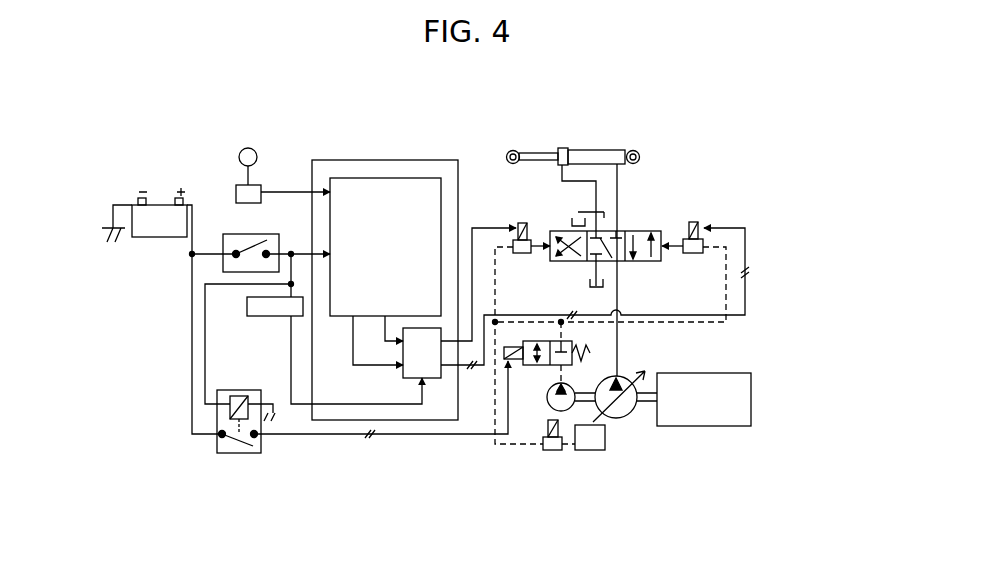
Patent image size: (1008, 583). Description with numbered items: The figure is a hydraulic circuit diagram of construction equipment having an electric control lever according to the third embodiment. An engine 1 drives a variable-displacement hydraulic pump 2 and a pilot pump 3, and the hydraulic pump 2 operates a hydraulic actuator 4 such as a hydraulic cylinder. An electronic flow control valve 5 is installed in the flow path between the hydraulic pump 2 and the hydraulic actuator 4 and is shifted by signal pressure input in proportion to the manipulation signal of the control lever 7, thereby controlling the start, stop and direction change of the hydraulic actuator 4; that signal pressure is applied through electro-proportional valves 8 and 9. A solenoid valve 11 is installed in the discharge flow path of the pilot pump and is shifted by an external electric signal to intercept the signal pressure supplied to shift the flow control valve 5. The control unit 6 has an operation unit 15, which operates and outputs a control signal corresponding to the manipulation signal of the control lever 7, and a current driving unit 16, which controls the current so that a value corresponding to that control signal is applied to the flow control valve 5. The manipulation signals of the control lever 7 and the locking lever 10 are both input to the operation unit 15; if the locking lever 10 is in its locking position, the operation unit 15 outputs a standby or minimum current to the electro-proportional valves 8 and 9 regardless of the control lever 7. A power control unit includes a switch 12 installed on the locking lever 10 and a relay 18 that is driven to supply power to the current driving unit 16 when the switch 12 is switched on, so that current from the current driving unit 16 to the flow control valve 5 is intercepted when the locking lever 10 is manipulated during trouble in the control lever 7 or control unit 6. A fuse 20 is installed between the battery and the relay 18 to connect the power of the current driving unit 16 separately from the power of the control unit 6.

The engine 1 is at (735, 373).
The variable-displacement hydraulic pump 2 is at (625, 418).
The pilot pump 3 is at (547, 407).
The hydraulic actuator 4 is at (593, 148).
The electronic flow control valve 5 is at (640, 231).
The control unit 6 is at (435, 160).
The electric control lever 7 is at (252, 148).
The electro-proportional valve 8 is at (697, 222).
The electro-proportional valve 9 is at (521, 253).
The manipulation locking lever 10 is at (223, 261).
The solenoid valve 11 is at (565, 337).
The switch 12 is at (256, 240).
The operation unit 15 is at (353, 178).
The current driving unit 16 is at (433, 378).
The relay 18 is at (238, 453).
The fuse 20 is at (262, 316).